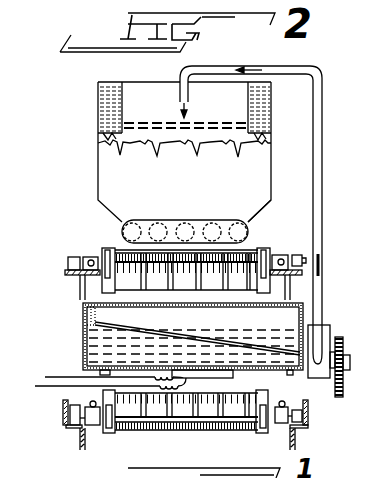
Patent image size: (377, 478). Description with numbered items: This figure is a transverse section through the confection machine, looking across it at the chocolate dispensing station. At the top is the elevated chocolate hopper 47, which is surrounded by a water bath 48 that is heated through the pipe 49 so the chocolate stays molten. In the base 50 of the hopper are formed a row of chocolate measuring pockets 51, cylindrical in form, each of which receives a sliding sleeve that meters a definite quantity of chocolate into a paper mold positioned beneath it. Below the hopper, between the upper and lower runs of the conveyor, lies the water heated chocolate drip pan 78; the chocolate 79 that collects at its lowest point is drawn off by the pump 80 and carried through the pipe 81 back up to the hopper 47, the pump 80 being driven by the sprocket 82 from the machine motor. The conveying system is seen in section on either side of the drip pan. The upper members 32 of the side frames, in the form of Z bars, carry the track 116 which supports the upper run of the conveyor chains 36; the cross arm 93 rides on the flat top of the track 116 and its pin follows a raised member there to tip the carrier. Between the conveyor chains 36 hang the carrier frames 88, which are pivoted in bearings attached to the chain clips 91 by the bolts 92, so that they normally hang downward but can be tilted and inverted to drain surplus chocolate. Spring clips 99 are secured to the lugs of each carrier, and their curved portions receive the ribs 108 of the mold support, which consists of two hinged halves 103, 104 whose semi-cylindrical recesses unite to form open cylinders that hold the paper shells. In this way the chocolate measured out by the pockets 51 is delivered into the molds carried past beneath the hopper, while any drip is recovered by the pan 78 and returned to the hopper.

The upper members 32 is at (63, 425).
The conveyor chains 36 is at (85, 282).
The chocolate hopper 47 is at (98, 143).
The water bath 48 is at (104, 104).
The pipe 49 is at (159, 152).
The base 50 is at (258, 244).
The chocolate measuring pockets 51 is at (250, 222).
The chocolate drip pan 78 is at (169, 346).
The chocolate 79 is at (260, 330).
The pump 80 is at (330, 335).
The pipe 81 is at (318, 252).
The sprocket 82 is at (345, 344).
The carrier frames 88 is at (102, 286).
The chain clips 91 is at (79, 256).
The bolts 92 is at (92, 258).
The cross arm 93 is at (300, 258).
The spring clips 99 is at (105, 250).
The mold support half 103 is at (185, 283).
The mold support half 104 is at (212, 396).
The ribs 108 is at (147, 257).
The track 116 is at (66, 272).